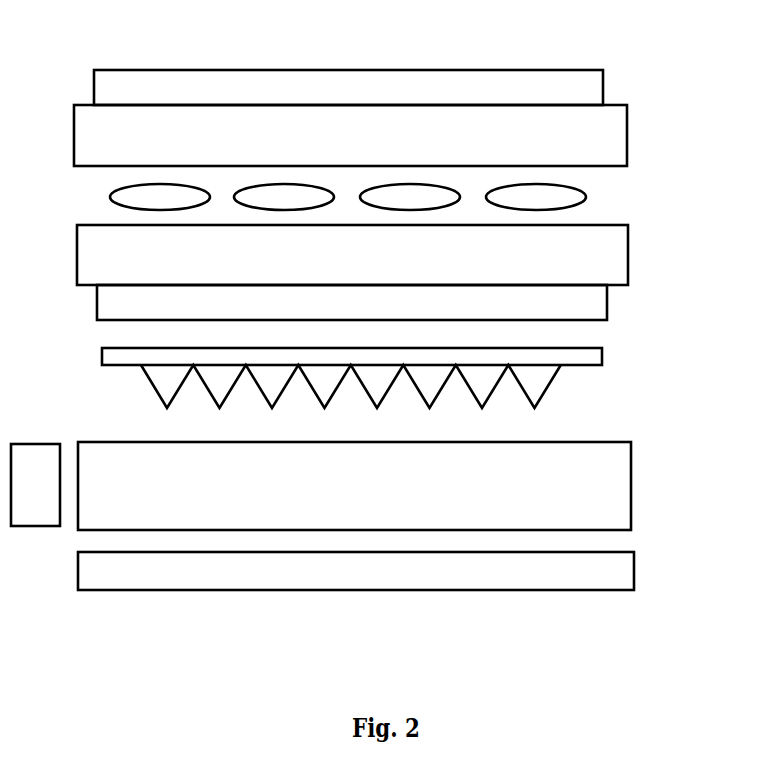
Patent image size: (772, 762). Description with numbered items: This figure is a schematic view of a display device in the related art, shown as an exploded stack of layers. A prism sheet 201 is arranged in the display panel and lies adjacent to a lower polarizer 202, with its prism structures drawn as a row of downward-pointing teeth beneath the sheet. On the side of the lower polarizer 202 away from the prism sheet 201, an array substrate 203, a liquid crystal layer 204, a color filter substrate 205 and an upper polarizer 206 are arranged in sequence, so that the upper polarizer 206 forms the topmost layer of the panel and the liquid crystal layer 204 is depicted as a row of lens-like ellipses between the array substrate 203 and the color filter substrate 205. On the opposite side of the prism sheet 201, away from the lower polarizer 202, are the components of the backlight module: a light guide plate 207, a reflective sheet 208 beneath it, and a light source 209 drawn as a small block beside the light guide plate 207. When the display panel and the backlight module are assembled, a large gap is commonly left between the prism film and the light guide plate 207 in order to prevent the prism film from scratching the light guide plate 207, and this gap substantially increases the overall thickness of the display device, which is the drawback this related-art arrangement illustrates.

The prism sheet 201 is at (587, 355).
The lower polarizer 202 is at (585, 299).
The array substrate 203 is at (602, 247).
The liquid crystal layer 204 is at (563, 192).
The color filter substrate 205 is at (583, 130).
The upper polarizer 206 is at (530, 85).
The light guide plate 207 is at (588, 485).
The reflective sheet 208 is at (567, 565).
The light source 209 is at (33, 522).